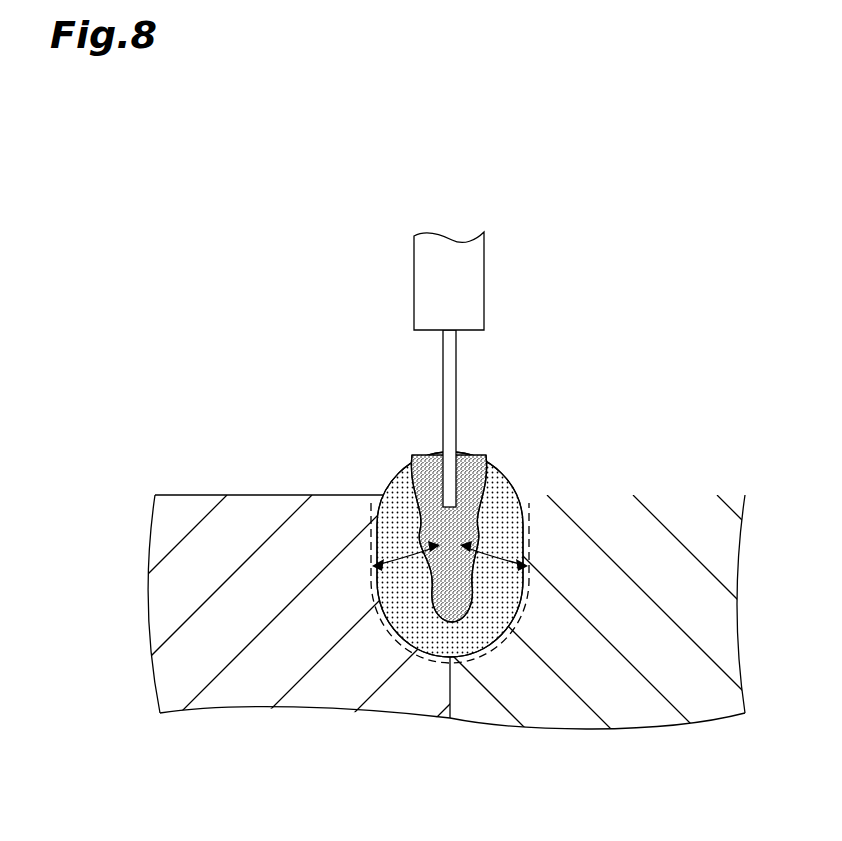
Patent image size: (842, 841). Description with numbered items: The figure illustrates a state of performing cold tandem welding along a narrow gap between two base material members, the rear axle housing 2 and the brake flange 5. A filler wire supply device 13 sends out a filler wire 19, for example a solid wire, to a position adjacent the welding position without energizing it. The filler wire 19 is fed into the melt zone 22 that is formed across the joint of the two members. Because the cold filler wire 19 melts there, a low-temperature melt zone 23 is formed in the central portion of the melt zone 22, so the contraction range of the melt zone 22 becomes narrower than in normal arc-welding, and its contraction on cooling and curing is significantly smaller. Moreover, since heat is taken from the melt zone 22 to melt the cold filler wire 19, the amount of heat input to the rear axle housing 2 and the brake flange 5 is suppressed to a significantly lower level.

The filler wire supply device 13 is at (484, 281).
The filler wire 19 is at (443, 378).
The melt zone 22 is at (403, 515).
The low-temperature melt zone 23 is at (467, 530).
The brake flange 5 is at (242, 696).
The rear axle housing 2 is at (573, 718).